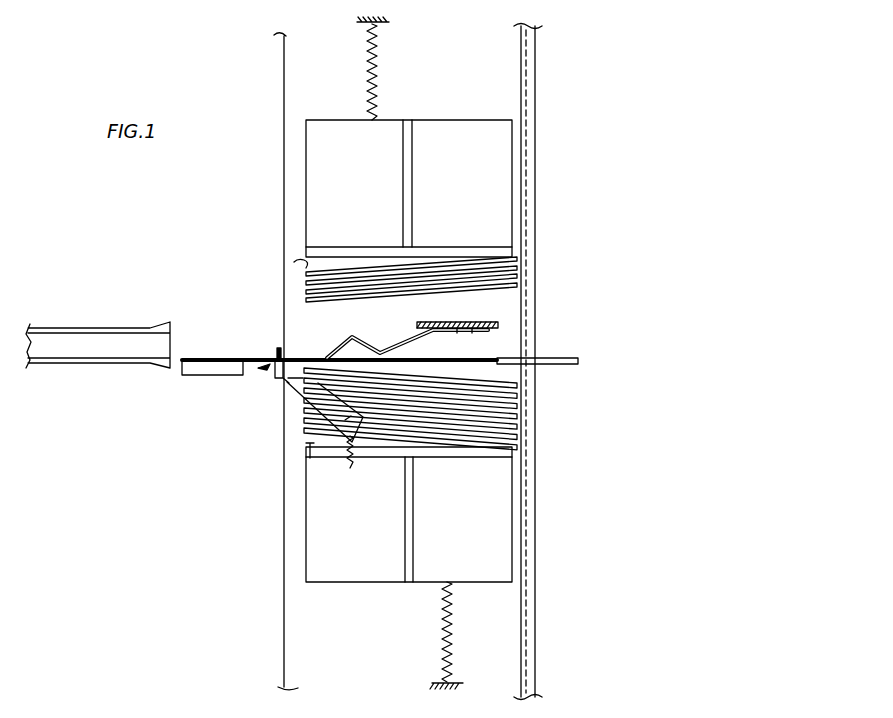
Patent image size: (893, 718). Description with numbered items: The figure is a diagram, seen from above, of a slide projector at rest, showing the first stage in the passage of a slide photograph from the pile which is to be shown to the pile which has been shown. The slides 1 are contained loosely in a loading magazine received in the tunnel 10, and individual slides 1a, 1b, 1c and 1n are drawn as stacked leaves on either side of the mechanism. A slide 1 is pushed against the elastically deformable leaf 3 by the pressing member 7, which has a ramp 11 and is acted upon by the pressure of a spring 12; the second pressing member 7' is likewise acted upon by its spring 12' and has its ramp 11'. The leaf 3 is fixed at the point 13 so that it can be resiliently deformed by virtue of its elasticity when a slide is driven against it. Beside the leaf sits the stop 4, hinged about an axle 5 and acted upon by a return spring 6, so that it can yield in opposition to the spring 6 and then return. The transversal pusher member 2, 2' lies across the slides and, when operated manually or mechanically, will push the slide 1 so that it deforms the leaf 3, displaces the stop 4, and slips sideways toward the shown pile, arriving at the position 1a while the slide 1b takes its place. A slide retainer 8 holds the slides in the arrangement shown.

The slide photograph 1 is at (445, 412).
The slide photograph 1a is at (517, 285).
The slide photograph 1b is at (517, 396).
The slide photograph 1c is at (517, 409).
The slide photograph 1n is at (517, 259).
The transversal pusher member 2 is at (380, 345).
The transversal pusher member 2' is at (261, 333).
The elastically deformable leaf 3 is at (380, 350).
The stop 4 is at (264, 370).
The axle 5 is at (316, 400).
The return spring 6 is at (352, 460).
The pressing member 7 is at (409, 530).
The pressing member 7' is at (409, 174).
The slide retainer 8 is at (122, 349).
The tunnel 10 is at (518, 628).
The ramp 11 is at (281, 478).
The ramp 11' is at (273, 259).
The spring 12 is at (465, 635).
The spring 12' is at (357, 68).
The fixing point 13 is at (462, 331).